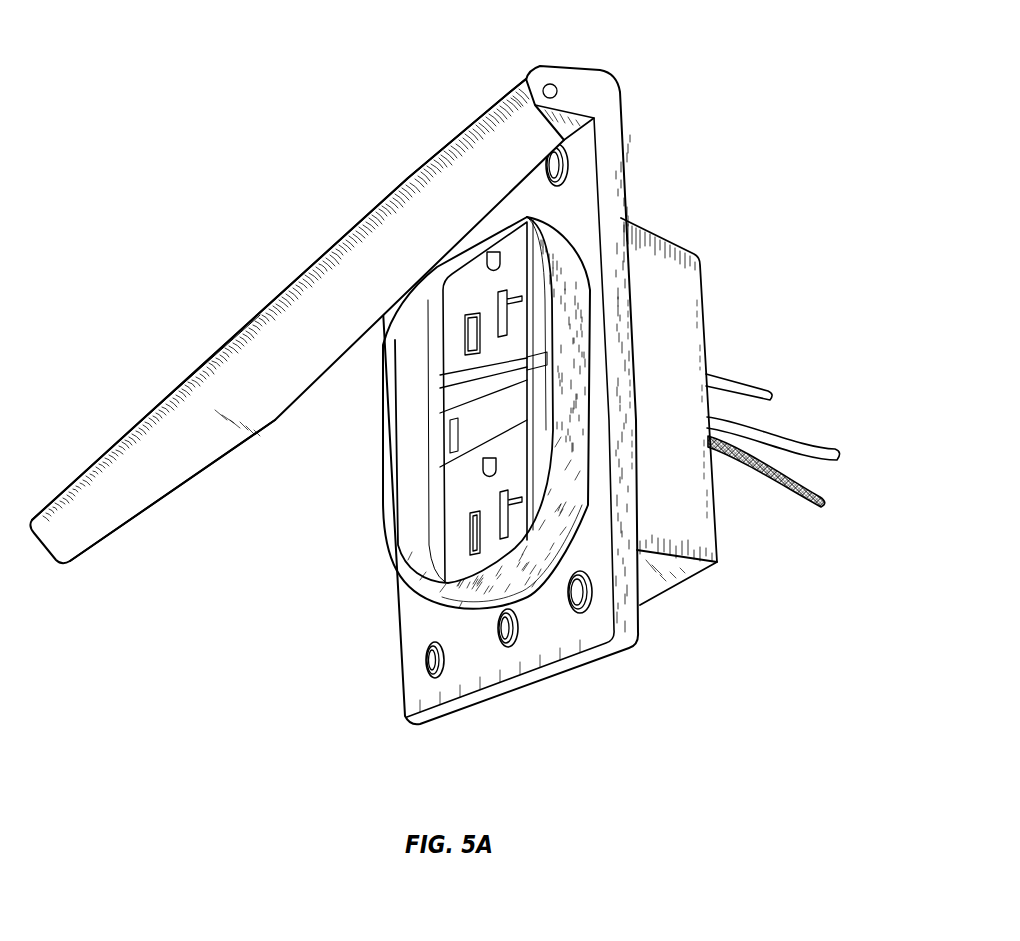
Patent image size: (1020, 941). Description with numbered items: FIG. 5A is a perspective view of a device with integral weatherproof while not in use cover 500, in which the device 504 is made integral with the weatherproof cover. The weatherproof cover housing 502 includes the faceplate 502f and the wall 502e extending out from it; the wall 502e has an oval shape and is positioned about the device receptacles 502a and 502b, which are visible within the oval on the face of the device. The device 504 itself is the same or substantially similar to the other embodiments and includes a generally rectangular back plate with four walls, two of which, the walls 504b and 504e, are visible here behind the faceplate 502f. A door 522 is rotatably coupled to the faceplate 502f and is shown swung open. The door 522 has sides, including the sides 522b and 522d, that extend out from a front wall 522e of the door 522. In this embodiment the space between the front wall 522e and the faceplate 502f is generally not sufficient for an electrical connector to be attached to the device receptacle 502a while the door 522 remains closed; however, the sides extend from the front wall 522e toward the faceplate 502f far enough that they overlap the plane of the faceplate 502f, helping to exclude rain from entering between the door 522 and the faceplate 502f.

The device with integral weatherproof while not in use cover 500 is at (434, 395).
The weatherproof cover housing 502 is at (467, 395).
The device receptacle 502a is at (473, 518).
The device receptacle 502b is at (457, 357).
The wall 502e is at (400, 430).
The faceplate 502f is at (567, 638).
The device 504 is at (730, 430).
The wall 504b is at (687, 360).
The wall 504e is at (667, 567).
The door 522 is at (297, 331).
The side 522b is at (112, 507).
The side 522d is at (343, 300).
The front wall 522e is at (183, 402).